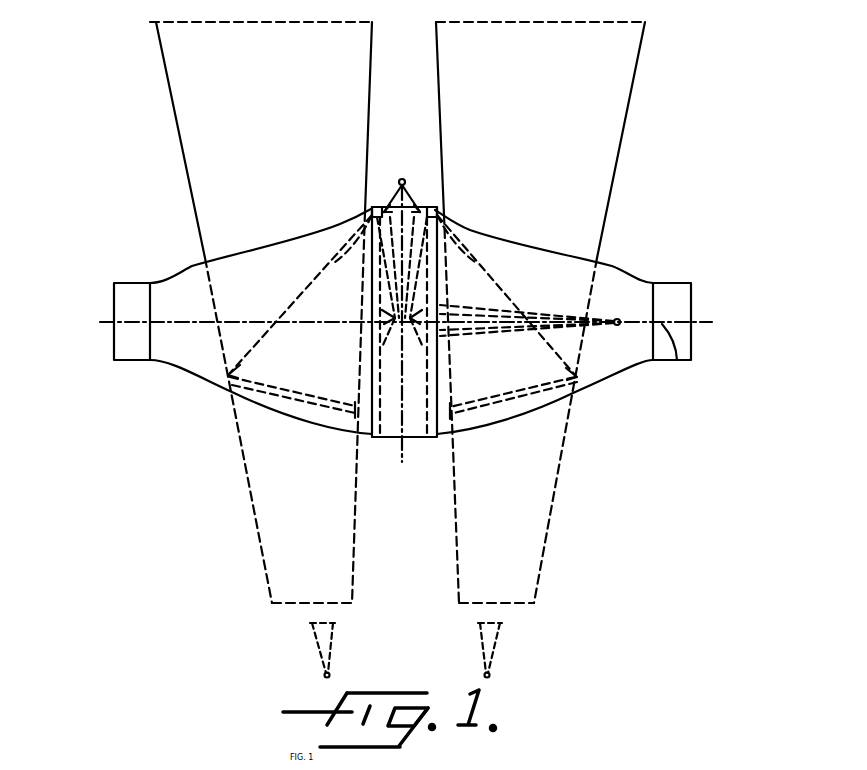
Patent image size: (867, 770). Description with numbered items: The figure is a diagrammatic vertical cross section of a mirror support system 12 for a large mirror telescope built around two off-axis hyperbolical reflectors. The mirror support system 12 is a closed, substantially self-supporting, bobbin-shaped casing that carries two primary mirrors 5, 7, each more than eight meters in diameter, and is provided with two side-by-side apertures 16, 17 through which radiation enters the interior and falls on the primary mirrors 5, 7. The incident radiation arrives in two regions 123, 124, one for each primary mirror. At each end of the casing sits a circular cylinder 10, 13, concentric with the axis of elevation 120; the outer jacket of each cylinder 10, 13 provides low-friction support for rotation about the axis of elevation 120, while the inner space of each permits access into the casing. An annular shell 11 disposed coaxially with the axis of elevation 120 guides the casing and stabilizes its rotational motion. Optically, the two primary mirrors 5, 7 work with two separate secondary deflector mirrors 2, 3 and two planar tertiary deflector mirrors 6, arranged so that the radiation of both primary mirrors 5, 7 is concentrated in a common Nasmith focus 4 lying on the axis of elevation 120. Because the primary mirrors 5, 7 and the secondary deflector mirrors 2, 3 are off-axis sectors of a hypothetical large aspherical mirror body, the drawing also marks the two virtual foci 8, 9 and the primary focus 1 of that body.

The primary focus 1 is at (402, 179).
The secondary deflector mirror 2 is at (372, 205).
The secondary deflector mirror 3 is at (437, 205).
The Nasmith focus 4 is at (617, 319).
The primary mirror 5 is at (280, 400).
The tertiary deflector mirror 6 is at (392, 340).
The primary mirror 7 is at (493, 420).
The virtual focus 8 is at (324, 676).
The virtual focus 9 is at (490, 676).
The circular cylinder 10 is at (132, 283).
The annular shell 11 is at (432, 438).
The mirror support system 12 is at (600, 387).
The circular cylinder 13 is at (690, 283).
The aperture 16 is at (245, 256).
The aperture 17 is at (520, 247).
The axis of elevation 120 is at (677, 362).
The region of incident radiation 123 is at (637, 75).
The region of incident radiation 124 is at (170, 103).